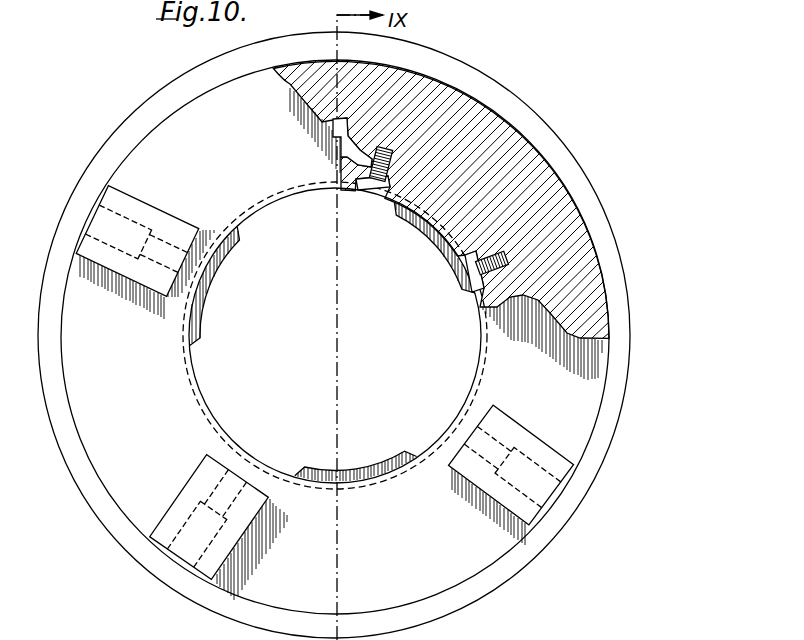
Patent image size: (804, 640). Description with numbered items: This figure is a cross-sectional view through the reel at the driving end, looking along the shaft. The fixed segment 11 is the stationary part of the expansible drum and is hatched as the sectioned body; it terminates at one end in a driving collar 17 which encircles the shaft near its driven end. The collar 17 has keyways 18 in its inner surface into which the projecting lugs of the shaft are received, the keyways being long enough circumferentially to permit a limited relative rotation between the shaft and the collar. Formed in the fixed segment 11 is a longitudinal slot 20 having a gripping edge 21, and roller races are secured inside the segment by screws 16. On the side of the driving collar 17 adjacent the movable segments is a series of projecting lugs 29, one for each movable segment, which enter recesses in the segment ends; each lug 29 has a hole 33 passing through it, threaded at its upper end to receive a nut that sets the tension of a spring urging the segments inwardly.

The fixed segment 11 is at (535, 192).
The screws 16 is at (506, 259).
The driving collar 17 is at (334, 335).
The keyways 18 is at (293, 198).
The longitudinal slot 20 is at (360, 118).
The gripping edge 21 is at (333, 123).
The projecting lugs 29 is at (152, 213).
The hole 33 is at (97, 222).